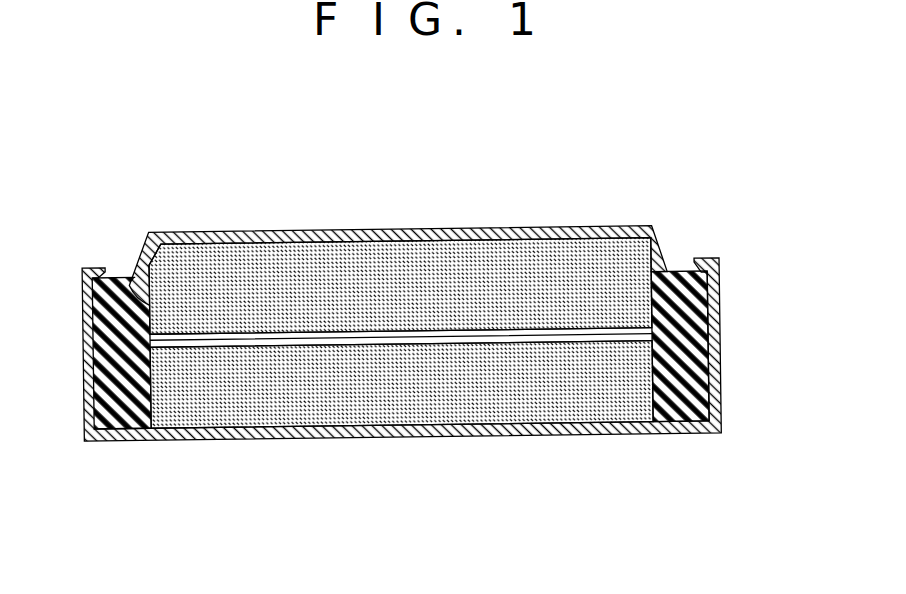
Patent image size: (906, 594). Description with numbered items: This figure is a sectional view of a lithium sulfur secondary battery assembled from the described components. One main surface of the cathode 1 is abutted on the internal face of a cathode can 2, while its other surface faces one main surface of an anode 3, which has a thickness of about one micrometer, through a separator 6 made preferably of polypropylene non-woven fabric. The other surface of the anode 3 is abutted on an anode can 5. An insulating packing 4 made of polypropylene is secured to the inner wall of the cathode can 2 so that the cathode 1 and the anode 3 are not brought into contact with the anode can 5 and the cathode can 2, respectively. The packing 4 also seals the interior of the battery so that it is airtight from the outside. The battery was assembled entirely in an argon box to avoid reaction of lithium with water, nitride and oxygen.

The cathode 1 is at (278, 392).
The cathode can 2 is at (586, 433).
The anode 3 is at (440, 242).
The insulating packing 4 is at (103, 382).
The anode can 5 is at (379, 230).
The separator 6 is at (593, 327).